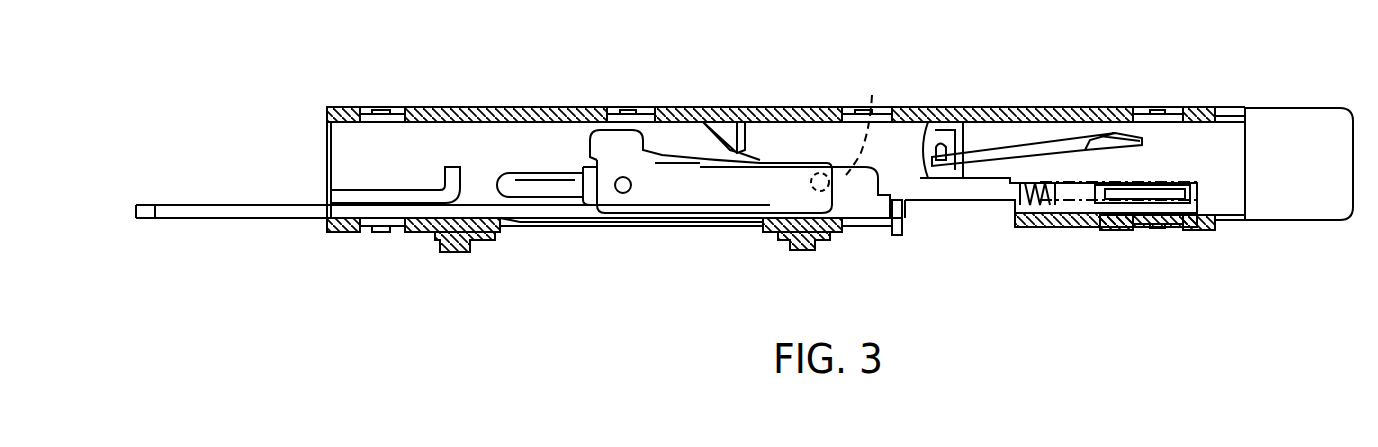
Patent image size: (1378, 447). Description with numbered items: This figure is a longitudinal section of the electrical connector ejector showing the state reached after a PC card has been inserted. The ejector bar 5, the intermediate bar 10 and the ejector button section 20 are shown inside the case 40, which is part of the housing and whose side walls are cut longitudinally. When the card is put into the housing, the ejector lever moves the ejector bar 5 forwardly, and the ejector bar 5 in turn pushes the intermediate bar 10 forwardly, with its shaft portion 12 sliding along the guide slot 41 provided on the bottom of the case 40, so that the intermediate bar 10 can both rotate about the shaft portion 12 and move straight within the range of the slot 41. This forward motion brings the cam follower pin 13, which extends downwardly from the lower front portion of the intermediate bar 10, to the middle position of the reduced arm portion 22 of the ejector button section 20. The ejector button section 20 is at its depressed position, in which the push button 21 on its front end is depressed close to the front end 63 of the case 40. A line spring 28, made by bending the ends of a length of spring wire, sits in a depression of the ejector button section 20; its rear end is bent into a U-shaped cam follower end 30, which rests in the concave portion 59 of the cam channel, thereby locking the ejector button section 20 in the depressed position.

The ejector bar 5 is at (250, 210).
The intermediate bar 10 is at (673, 182).
The shaft portion 12 is at (626, 194).
The cam follower pin 13 is at (872, 95).
The ejector button section 20 is at (803, 132).
The push button 21 is at (1296, 130).
The reduced arm portion 22 is at (840, 178).
The line spring 28 is at (1034, 142).
The cam follower end 30 is at (938, 150).
The case 40 is at (1017, 90).
The guide slot 41 is at (551, 191).
The concave portion 59 is at (944, 152).
The front end 63 is at (1216, 110).